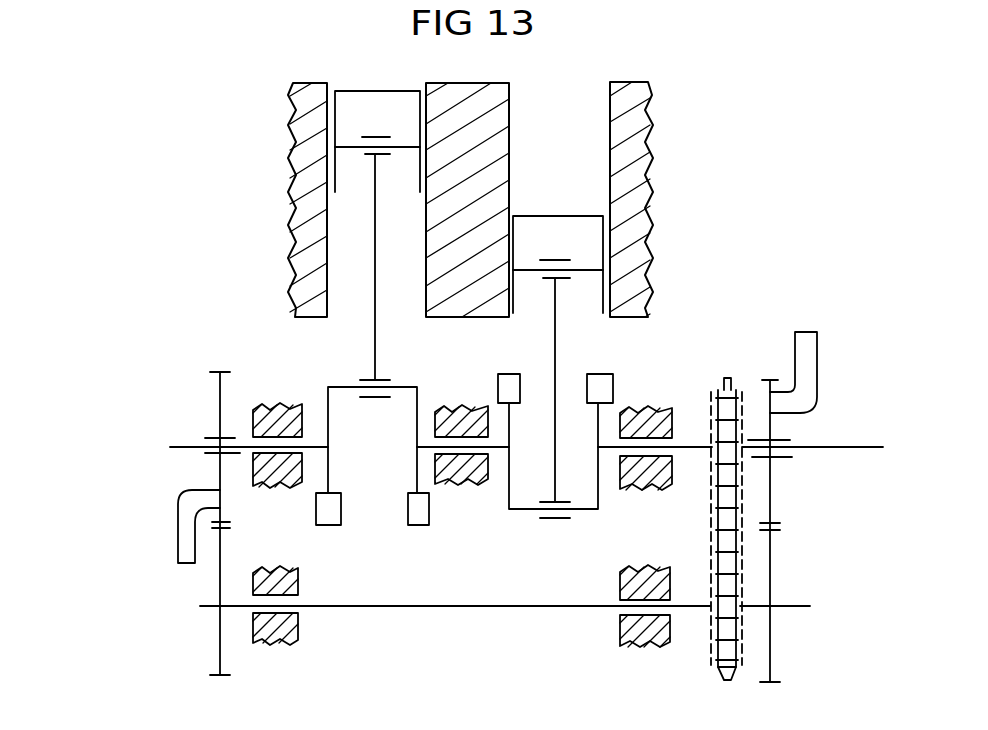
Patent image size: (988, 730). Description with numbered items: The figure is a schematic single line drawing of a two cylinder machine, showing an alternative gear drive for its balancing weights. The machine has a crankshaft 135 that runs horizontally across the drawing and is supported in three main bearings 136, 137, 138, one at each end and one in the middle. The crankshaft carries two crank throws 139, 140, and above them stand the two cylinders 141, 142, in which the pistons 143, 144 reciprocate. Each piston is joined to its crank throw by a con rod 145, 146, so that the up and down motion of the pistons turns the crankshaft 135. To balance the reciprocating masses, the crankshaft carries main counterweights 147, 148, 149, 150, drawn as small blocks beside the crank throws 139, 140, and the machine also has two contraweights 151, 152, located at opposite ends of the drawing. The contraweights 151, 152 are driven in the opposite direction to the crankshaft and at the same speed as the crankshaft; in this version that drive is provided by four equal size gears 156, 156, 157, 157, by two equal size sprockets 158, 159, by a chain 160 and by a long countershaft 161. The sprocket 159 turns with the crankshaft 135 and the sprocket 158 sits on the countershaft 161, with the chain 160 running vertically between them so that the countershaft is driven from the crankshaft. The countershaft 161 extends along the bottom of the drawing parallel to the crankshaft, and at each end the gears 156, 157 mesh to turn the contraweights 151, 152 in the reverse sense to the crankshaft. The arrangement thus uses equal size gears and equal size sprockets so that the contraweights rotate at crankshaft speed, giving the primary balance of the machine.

The crankshaft 135 is at (862, 447).
The main bearing 136 is at (290, 406).
The main bearing 137 is at (462, 406).
The main bearing 138 is at (652, 484).
The crank throw 139 is at (405, 392).
The crank throw 140 is at (526, 510).
The cylinder 141 is at (296, 219).
The cylinder 142 is at (610, 99).
The piston 143 is at (373, 90).
The piston 144 is at (563, 215).
The con rod 145 is at (375, 338).
The con rod 146 is at (555, 310).
The main counterweight 147 is at (329, 528).
The main counterweight 148 is at (416, 528).
The main counterweight 149 is at (508, 374).
The main counterweight 150 is at (598, 380).
The contraweight 151 is at (184, 537).
The contraweight 152 is at (808, 352).
The gear 156 is at (220, 635).
The gear 157 is at (220, 400).
The sprocket 158 is at (726, 681).
The sprocket 159 is at (689, 498).
The chain 160 is at (712, 528).
The long countershaft 161 is at (487, 608).